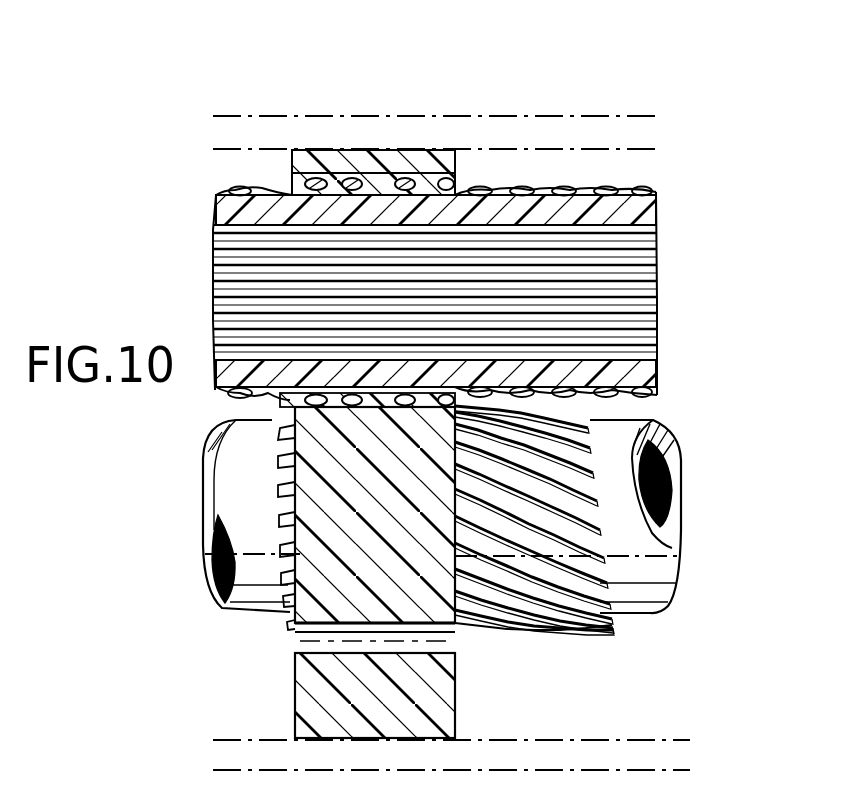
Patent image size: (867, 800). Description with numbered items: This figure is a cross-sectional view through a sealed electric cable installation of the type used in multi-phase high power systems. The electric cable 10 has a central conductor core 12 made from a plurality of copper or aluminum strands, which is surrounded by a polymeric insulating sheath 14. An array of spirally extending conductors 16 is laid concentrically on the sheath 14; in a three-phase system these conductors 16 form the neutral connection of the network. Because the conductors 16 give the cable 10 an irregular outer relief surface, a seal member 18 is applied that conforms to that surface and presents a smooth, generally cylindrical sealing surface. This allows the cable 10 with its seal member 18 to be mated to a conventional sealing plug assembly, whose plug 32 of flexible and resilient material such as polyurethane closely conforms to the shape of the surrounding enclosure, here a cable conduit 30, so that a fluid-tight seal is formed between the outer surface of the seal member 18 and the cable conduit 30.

The electric cable 10 is at (672, 162).
The central conductor core 12 is at (630, 291).
The polymeric insulating sheath 14 is at (660, 205).
The spirally extending conductors 16 is at (553, 186).
The seal member 18 is at (356, 150).
The cable conduit 30 is at (490, 126).
The plug 32 is at (442, 688).